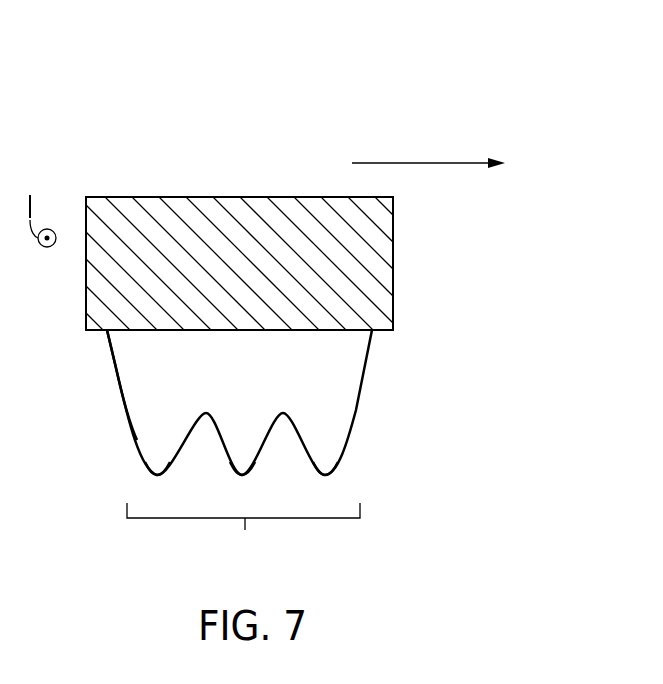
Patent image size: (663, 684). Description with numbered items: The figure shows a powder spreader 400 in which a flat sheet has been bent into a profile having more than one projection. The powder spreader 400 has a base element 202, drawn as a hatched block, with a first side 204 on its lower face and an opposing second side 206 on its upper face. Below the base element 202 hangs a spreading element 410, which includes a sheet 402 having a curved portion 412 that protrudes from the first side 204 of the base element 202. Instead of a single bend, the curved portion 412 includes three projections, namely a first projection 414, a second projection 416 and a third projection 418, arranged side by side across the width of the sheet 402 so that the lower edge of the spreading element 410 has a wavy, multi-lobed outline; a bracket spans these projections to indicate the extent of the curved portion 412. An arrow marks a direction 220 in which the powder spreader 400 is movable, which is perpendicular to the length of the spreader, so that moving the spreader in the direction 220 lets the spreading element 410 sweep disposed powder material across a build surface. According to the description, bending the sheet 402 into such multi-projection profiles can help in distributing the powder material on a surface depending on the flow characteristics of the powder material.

The base element 202 is at (380, 230).
The first side 204 is at (88, 331).
The second side 206 is at (146, 197).
The direction 220 is at (425, 162).
The powder spreader 400 is at (466, 78).
The sheet 402 is at (358, 410).
The spreading element 410 is at (106, 392).
The curved portion 412 is at (243, 534).
The first projection 414 is at (162, 474).
The second projection 416 is at (243, 474).
The third projection 418 is at (326, 474).